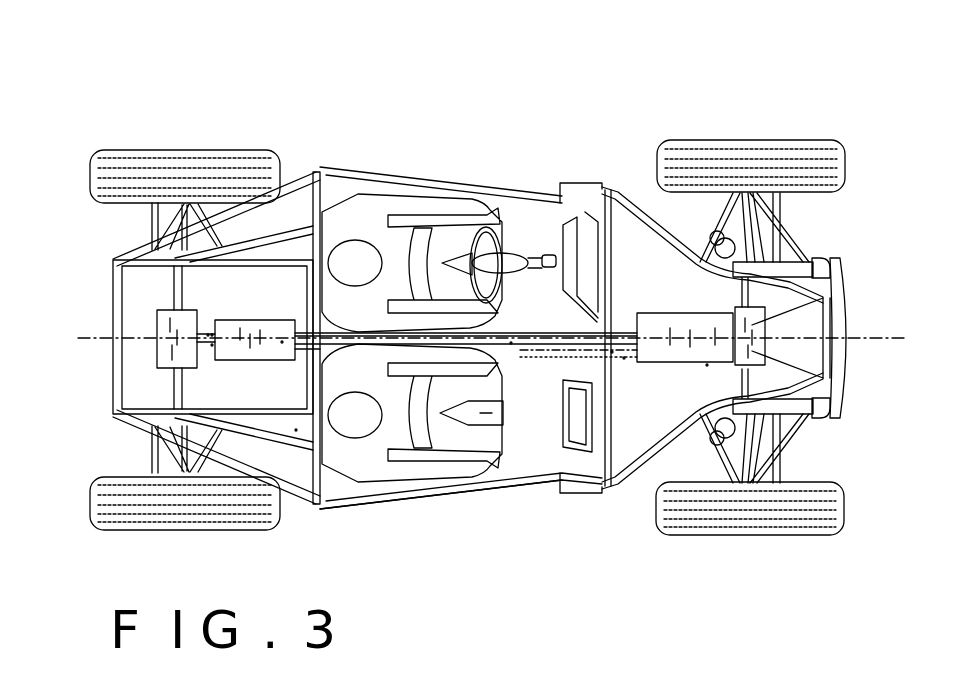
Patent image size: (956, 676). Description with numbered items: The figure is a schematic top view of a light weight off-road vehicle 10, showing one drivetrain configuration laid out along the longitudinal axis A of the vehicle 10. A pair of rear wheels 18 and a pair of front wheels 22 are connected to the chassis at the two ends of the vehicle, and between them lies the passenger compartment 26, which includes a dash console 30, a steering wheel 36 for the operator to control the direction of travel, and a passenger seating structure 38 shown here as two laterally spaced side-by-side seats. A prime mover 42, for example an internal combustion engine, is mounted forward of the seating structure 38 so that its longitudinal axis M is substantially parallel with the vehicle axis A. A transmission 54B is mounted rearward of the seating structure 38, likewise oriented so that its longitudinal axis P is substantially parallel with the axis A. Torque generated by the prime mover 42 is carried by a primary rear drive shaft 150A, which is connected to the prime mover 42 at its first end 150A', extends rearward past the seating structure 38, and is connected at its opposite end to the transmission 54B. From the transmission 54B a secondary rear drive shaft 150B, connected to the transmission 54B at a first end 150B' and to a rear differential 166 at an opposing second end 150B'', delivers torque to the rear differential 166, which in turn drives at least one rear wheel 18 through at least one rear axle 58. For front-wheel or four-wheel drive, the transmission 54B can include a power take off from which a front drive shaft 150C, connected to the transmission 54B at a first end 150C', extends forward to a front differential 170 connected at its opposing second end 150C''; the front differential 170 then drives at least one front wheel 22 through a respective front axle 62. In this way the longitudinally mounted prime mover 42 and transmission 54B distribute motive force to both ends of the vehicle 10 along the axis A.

The off-road vehicle 10 is at (452, 98).
The rear wheels 18 is at (168, 172).
The front wheels 22 is at (730, 160).
The passenger compartment 26 is at (455, 503).
The dash console 30 is at (588, 213).
The steering wheel 36 is at (508, 232).
The passenger seating structure 38 is at (343, 217).
The prime mover 42 is at (677, 328).
The transmission 54B is at (273, 362).
The rear axle 58 is at (152, 228).
The front axle 62 is at (775, 225).
The rear differential 166 is at (168, 352).
The front differential 170 is at (820, 302).
The primary rear drive shaft 150A is at (548, 441).
The first end of primary rear drive shaft 150A' is at (660, 222).
The secondary rear drive shaft 150B is at (238, 304).
The first end of secondary rear drive shaft 150B' is at (121, 386).
The second end of secondary rear drive shaft 150B'' is at (118, 306).
The front drive shaft 150C is at (642, 381).
The first end of front drive shaft 150C' is at (252, 498).
The second end of front drive shaft 150C'' is at (663, 471).
The longitudinal axis of the transmission P is at (282, 342).
The longitudinal axis of the prime mover M is at (701, 330).
The longitudinal axis of the vehicle A is at (492, 337).